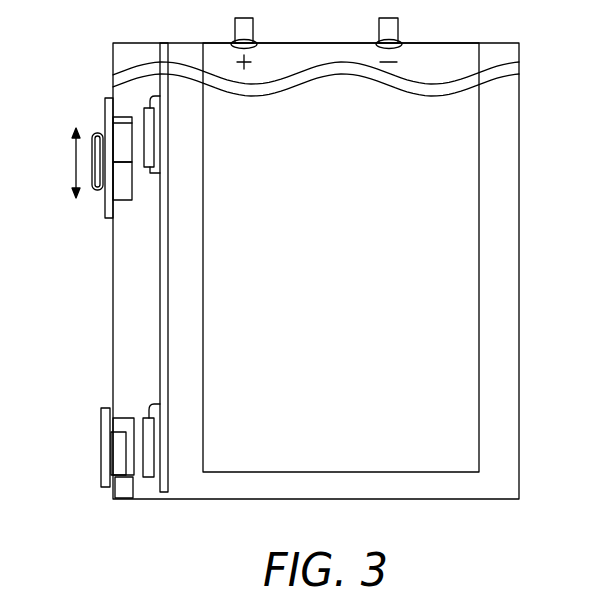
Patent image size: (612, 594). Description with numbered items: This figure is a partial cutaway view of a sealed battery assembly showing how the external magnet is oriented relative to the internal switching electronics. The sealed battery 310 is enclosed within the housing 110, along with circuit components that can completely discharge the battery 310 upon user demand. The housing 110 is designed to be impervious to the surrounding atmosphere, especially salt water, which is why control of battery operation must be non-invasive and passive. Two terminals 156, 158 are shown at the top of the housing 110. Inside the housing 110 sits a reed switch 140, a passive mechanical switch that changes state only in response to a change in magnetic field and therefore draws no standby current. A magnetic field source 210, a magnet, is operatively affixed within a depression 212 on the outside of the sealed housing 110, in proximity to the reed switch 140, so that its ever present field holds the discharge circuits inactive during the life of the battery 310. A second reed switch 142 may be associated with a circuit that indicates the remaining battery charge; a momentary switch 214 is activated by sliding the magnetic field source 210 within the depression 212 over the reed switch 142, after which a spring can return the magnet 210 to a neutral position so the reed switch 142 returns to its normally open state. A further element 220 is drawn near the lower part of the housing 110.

The housing 110 is at (519, 254).
The sealed battery 310 is at (479, 322).
The negative terminal 156 is at (398, 32).
The positive terminal 158 is at (235, 32).
The reed switch 140 is at (160, 316).
The second reed switch 142 is at (145, 108).
The magnetic field source 210 is at (123, 142).
The depression 212 is at (123, 192).
The momentary switch 214 is at (105, 204).
The lower plate 220 is at (101, 448).